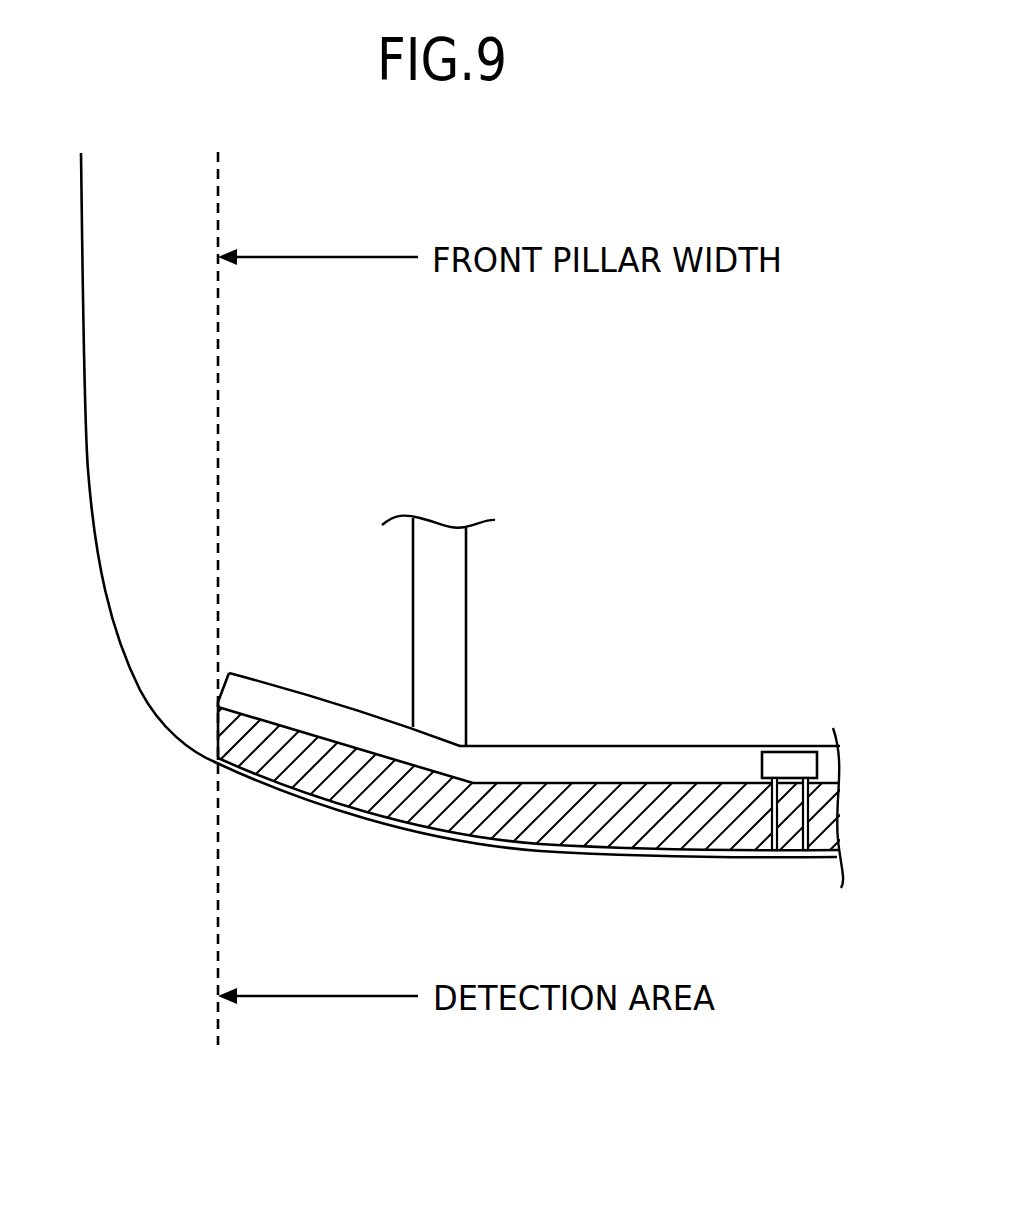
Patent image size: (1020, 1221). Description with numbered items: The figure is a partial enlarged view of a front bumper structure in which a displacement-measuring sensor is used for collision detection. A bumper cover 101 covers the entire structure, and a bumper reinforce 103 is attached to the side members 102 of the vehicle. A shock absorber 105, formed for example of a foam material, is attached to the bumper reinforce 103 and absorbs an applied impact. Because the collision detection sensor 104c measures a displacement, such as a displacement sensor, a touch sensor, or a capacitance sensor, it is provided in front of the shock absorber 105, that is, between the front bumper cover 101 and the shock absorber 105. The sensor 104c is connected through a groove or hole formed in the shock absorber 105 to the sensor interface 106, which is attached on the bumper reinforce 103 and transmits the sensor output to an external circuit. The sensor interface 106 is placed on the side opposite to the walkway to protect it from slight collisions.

The bumper cover 101 is at (608, 858).
The side member 102 is at (455, 587).
The bumper reinforce 103 is at (605, 758).
The sensor 104c is at (368, 815).
The shock absorber 105 is at (230, 740).
The sensor interface 106 is at (787, 765).